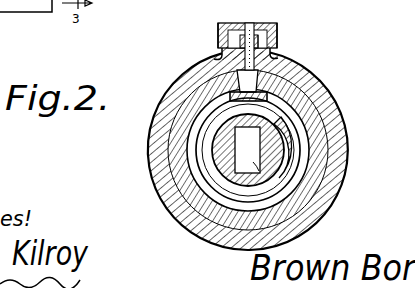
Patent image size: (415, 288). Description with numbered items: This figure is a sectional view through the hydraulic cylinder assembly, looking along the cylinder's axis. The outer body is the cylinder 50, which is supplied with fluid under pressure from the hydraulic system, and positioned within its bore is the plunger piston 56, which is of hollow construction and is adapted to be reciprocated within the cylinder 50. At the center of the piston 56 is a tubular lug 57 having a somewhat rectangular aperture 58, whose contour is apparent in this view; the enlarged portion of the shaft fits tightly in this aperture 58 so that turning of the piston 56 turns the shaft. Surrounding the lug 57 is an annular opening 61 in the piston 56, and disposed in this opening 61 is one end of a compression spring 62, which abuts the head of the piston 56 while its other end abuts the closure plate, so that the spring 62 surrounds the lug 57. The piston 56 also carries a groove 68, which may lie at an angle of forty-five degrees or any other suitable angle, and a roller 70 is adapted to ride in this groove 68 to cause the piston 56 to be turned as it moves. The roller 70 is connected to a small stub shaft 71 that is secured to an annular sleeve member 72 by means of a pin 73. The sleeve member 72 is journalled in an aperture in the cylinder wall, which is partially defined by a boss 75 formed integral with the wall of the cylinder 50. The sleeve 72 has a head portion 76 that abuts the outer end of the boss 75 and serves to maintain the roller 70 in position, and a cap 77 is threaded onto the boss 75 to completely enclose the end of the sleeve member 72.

The cylinder 50 is at (330, 108).
The plunger piston 56 is at (330, 132).
The tubular lug 57 is at (308, 178).
The aperture 58 is at (325, 200).
The annular opening 61 is at (305, 158).
The compression spring 62 is at (290, 167).
The groove 68 is at (220, 70).
The roller 70 is at (277, 57).
The stub shaft 71 is at (259, 30).
The sleeve member 72 is at (277, 42).
The pin 73 is at (249, 28).
The boss 75 is at (222, 50).
The head portion 76 is at (238, 30).
The cap 77 is at (218, 35).